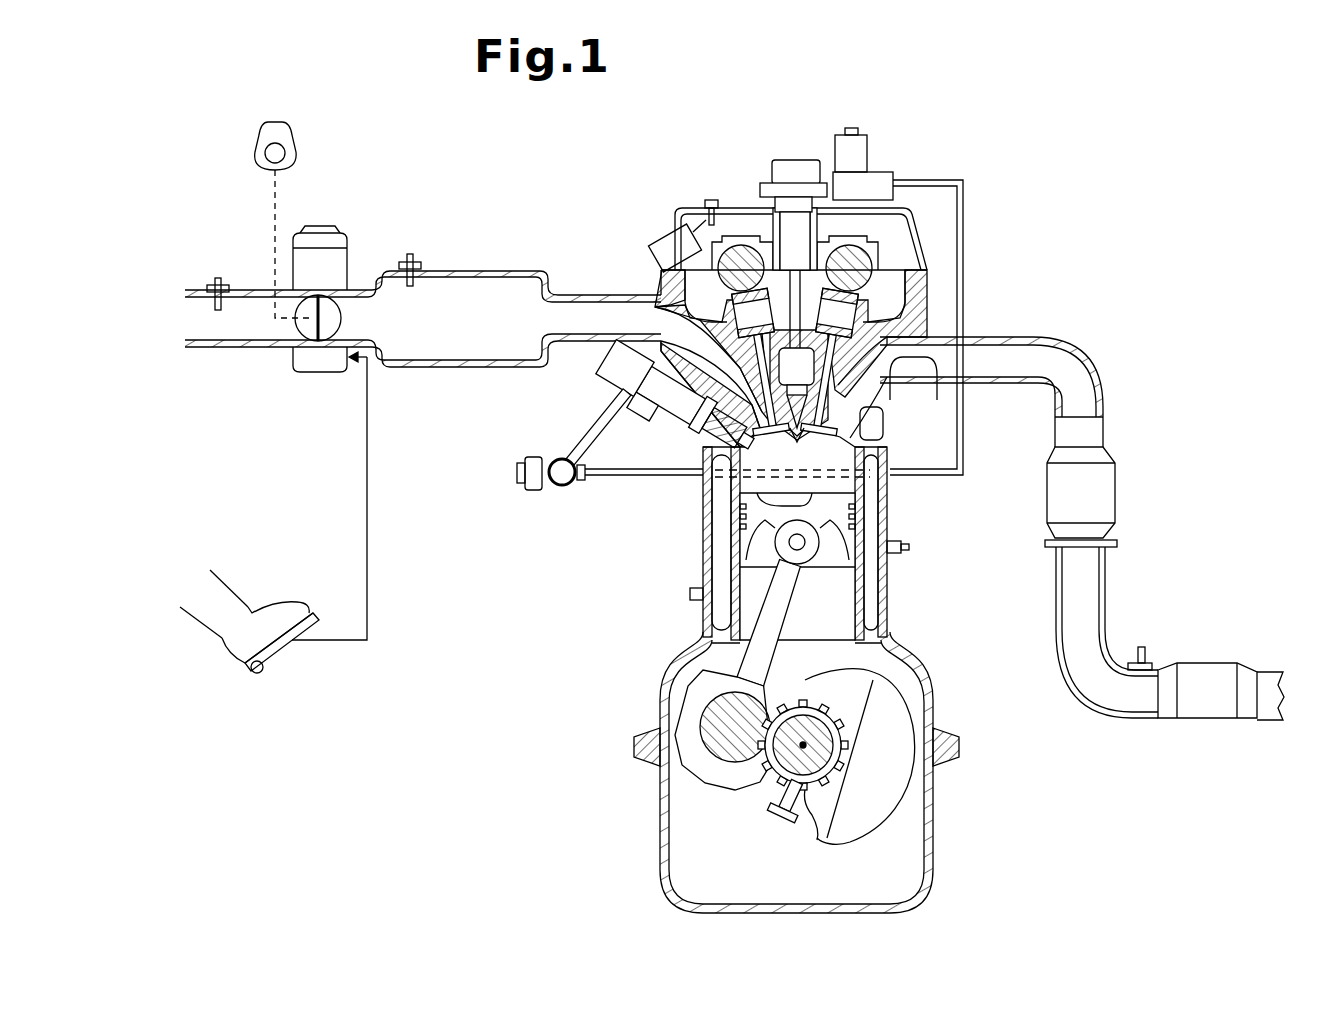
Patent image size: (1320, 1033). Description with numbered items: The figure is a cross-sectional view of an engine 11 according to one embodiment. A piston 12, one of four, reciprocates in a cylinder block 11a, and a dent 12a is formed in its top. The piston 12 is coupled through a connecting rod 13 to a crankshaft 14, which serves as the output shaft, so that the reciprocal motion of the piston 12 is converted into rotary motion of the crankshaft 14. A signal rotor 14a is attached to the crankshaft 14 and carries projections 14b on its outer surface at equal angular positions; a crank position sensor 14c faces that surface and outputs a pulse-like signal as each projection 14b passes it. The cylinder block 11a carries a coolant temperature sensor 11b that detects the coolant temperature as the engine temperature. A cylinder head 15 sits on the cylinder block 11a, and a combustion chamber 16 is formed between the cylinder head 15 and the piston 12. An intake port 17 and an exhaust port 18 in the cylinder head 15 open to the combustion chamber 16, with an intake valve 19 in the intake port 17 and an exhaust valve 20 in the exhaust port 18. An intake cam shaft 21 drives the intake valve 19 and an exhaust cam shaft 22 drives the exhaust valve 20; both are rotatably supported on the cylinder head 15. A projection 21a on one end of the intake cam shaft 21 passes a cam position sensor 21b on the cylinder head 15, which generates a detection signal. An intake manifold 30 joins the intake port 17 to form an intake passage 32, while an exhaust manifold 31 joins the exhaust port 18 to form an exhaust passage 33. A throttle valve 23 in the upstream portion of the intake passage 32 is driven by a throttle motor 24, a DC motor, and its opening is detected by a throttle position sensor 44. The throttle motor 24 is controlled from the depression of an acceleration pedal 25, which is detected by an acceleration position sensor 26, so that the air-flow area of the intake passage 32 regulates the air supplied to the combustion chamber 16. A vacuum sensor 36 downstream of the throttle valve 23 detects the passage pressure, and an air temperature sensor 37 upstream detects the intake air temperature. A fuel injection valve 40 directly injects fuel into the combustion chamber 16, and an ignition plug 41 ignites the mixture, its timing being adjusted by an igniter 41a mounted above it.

The engine 11 is at (1062, 143).
The cylinder block 11a is at (890, 590).
The coolant temperature sensor 11b is at (909, 547).
The piston 12 is at (827, 568).
The dent 12a is at (752, 565).
The connecting rod 13 is at (781, 652).
The crankshaft 14 is at (836, 786).
The signal rotor 14a is at (810, 832).
The projections 14b is at (841, 745).
The crank position sensor 14c is at (766, 815).
The cylinder head 15 is at (905, 405).
The combustion chamber 16 is at (740, 488).
The intake port 17 is at (622, 390).
The exhaust port 18 is at (950, 387).
The intake valve 19 is at (705, 450).
The exhaust valve 20 is at (880, 468).
The intake cam shaft 21 is at (740, 240).
The projection 21a is at (660, 230).
The cam position sensor 21b is at (712, 200).
The exhaust cam shaft 22 is at (892, 200).
The throttle valve 23 is at (341, 318).
The throttle motor 24 is at (347, 247).
The acceleration pedal 25 is at (283, 648).
The acceleration position sensor 26 is at (320, 373).
The intake manifold 30 is at (520, 271).
The exhaust manifold 31 is at (1065, 337).
The intake passage 32 is at (533, 338).
The exhaust passage 33 is at (1014, 376).
The vacuum sensor 36 is at (410, 254).
The air temperature sensor 37 is at (218, 278).
The fuel injection valve 40 is at (603, 360).
The ignition plug 41 is at (792, 442).
The igniter 41a is at (772, 168).
The throttle position sensor 44 is at (292, 152).